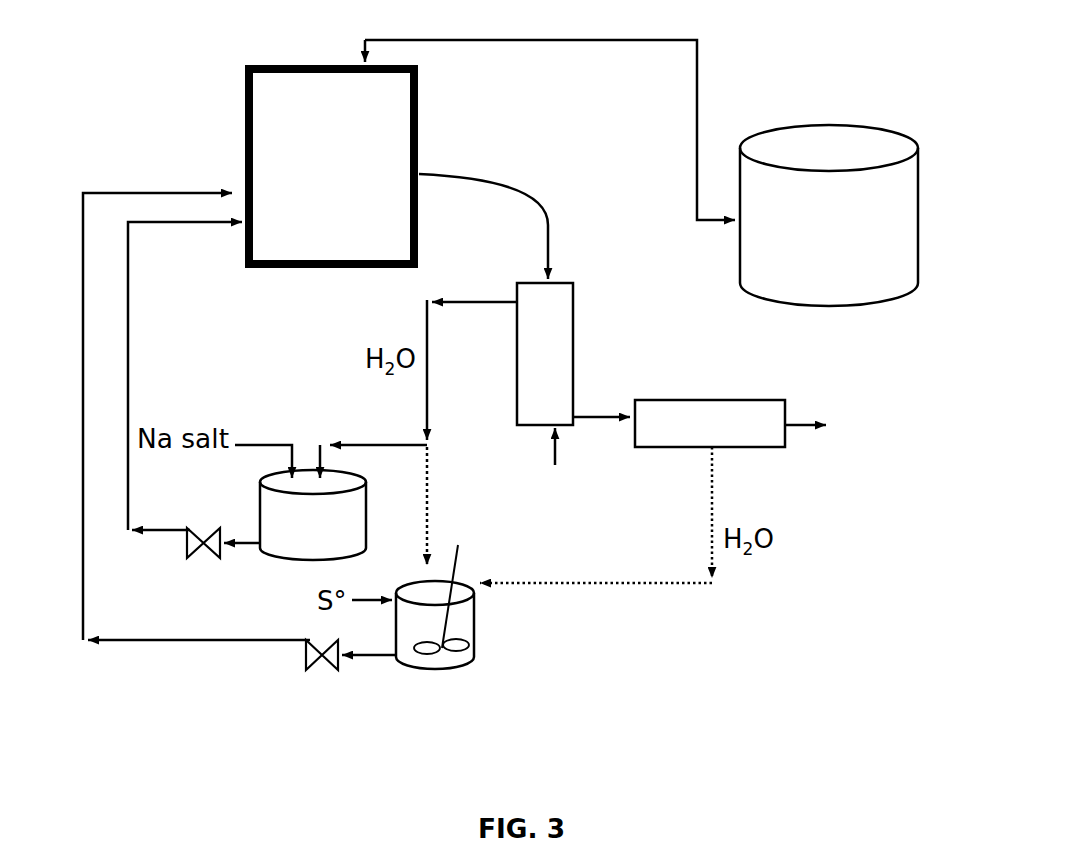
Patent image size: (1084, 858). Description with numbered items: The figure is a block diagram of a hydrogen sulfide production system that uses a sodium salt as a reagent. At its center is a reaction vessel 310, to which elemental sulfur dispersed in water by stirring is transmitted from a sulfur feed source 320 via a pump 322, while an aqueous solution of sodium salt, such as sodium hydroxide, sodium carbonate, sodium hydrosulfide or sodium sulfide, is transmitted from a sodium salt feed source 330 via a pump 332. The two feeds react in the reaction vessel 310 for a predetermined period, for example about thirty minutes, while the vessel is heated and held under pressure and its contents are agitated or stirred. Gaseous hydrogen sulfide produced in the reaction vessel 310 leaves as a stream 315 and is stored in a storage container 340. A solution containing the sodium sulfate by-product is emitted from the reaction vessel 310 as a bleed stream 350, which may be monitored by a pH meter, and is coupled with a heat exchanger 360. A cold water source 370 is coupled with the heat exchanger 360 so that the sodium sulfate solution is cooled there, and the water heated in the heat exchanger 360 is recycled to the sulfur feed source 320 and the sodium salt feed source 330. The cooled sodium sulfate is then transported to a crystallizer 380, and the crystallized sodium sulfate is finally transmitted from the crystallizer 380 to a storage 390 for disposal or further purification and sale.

The reaction vessel 310 is at (331, 166).
The stream 315 is at (550, 111).
The sulfur feed source 320 is at (487, 650).
The pump 322 is at (302, 682).
The sodium salt feed source 330 is at (313, 515).
The pump 332 is at (192, 575).
The storage container 340 is at (829, 215).
The bleed stream 350 is at (494, 221).
The heat exchanger 360 is at (587, 343).
The cold water source 370 is at (554, 470).
The crystallizer 380 is at (714, 393).
The storage 390 is at (841, 428).